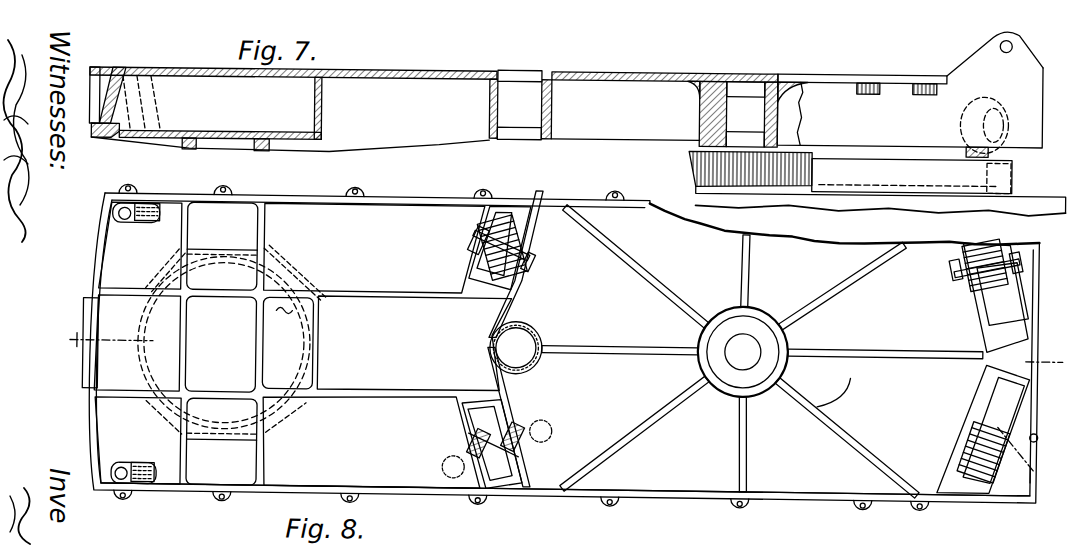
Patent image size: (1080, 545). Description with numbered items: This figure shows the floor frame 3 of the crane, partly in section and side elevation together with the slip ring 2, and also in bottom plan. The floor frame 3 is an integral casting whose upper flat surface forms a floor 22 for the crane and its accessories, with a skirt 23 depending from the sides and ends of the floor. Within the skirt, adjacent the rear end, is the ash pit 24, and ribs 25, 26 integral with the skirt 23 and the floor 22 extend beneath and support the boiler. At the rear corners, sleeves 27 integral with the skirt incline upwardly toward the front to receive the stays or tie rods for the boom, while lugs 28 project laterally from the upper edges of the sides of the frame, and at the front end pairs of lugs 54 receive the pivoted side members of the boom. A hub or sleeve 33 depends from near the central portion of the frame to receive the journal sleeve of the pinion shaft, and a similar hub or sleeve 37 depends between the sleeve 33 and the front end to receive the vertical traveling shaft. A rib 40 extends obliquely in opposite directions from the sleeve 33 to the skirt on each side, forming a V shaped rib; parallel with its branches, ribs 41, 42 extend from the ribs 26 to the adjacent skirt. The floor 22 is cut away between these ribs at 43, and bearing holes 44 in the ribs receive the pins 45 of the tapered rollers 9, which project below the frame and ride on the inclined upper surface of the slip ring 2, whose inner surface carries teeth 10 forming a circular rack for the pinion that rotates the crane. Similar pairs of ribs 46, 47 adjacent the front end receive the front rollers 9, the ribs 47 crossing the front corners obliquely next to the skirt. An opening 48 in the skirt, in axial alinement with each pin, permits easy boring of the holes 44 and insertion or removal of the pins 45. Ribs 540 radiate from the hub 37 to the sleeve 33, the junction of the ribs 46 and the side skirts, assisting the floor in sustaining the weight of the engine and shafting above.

In FIG. 7, the slip ring 2 is at (881, 186).
In FIG. 7, the floor frame 3 is at (910, 99).
In FIG. 8, the floor frame 3 is at (566, 348).
In FIG. 7, the tapered rollers 9 is at (993, 144).
In FIG. 8, the tapered rollers 9 is at (515, 227).
In FIG. 7, the teeth 10 is at (707, 160).
In FIG. 8, the teeth 10 is at (956, 426).
In FIG. 7, the floor 22 is at (428, 66).
In FIG. 8, the floor 22 is at (414, 344).
In FIG. 7, the skirt 23 is at (625, 124).
In FIG. 8, the skirt 23 is at (421, 486).
In FIG. 7, the ash pit 24 is at (289, 110).
In FIG. 8, the rib 25 is at (263, 230).
In FIG. 8, the rib 26 is at (373, 290).
In FIG. 8, the sleeves 27 is at (135, 222).
In FIG. 8, the lugs 28 is at (364, 189).
In FIG. 7, the hub or sleeve 33 is at (553, 95).
In FIG. 8, the hub or sleeve 33 is at (558, 322).
In FIG. 7, the hub or sleeve 37 is at (773, 120).
In FIG. 8, the hub or sleeve 37 is at (765, 340).
In FIG. 8, the V shaped rib 40 is at (512, 290).
In FIG. 8, the rib 41 is at (472, 262).
In FIG. 8, the rib 42 is at (471, 421).
In FIG. 8, the cut-away portion of floor 43 is at (518, 219).
In FIG. 8, the bearing holes 44 is at (497, 449).
In FIG. 8, the pins 45 is at (531, 262).
In FIG. 8, the rib 46 is at (975, 391).
In FIG. 8, the rib 47 is at (1022, 408).
In FIG. 8, the opening 48 is at (1036, 466).
In FIG. 7, the lugs 54 is at (1023, 47).
In FIG. 8, the ribs 540 is at (843, 386).